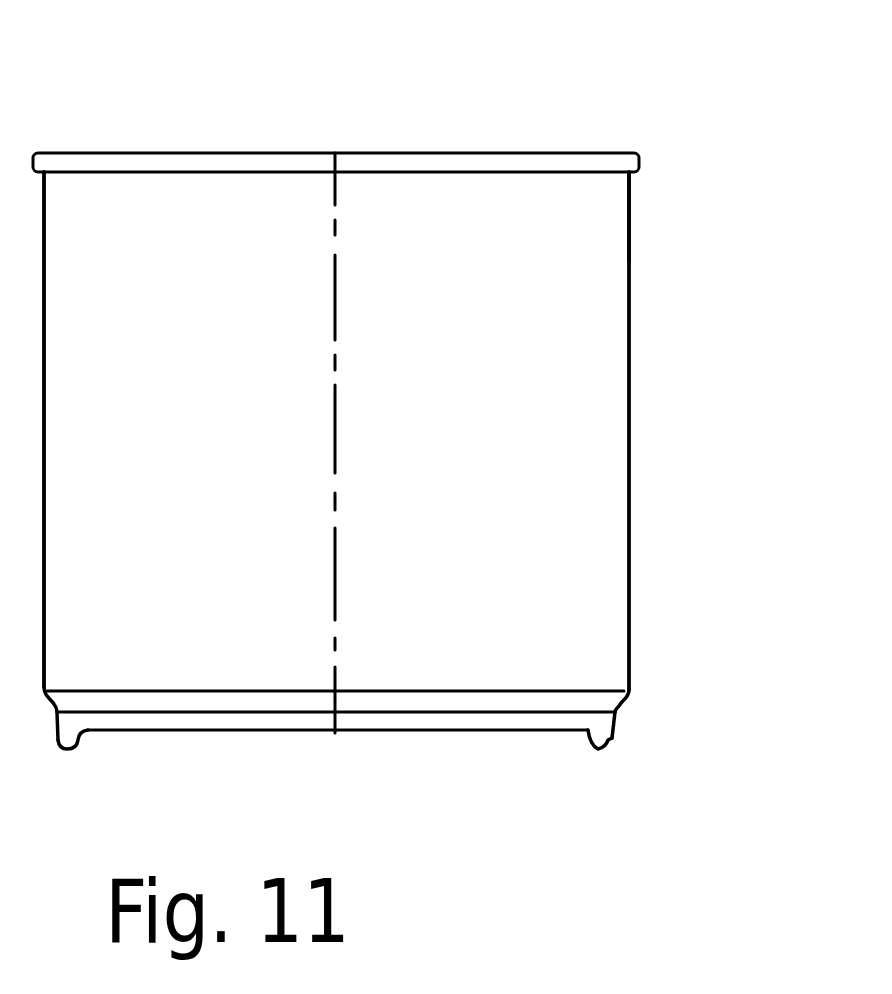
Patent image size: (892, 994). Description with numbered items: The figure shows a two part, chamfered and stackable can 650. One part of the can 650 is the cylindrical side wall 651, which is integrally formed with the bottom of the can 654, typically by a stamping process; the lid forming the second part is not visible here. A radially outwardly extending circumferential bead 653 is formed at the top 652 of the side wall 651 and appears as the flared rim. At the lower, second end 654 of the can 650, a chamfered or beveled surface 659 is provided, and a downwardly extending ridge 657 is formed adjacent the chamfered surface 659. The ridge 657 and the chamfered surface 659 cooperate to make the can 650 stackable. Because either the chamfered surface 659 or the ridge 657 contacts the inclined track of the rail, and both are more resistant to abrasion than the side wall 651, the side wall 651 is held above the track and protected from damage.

The can 650 is at (622, 122).
The side wall 651 is at (630, 412).
The top of side wall 652 is at (622, 202).
The circumferential bead 653 is at (638, 163).
The bottom of the can 654 is at (639, 695).
The ridge 657 is at (612, 742).
The chamfered surface 659 is at (623, 700).